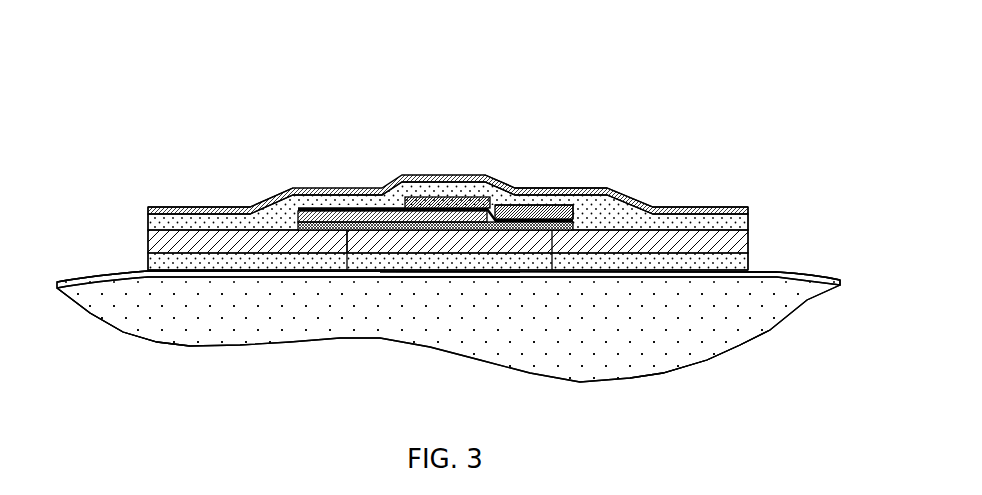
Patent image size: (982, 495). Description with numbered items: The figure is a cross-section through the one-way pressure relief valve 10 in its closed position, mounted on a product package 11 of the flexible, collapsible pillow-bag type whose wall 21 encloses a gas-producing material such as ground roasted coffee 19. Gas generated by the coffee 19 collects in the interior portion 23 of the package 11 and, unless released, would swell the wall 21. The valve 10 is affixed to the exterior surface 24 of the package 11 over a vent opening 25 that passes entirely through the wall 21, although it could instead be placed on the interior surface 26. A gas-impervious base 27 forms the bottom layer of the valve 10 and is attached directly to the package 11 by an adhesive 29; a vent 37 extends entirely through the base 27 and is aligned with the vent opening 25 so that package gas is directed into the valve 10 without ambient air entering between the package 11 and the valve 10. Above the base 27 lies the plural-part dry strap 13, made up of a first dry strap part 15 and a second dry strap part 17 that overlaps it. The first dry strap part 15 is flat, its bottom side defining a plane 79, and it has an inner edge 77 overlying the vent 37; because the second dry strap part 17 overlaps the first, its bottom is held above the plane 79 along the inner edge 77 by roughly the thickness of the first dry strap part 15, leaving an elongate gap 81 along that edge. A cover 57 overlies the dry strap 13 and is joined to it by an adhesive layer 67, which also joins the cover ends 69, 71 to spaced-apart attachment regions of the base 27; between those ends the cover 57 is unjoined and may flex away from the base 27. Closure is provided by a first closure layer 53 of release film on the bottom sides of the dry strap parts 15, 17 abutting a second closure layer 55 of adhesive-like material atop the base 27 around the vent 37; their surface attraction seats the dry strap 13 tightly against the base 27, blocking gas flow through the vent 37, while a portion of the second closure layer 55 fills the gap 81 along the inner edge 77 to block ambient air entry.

The one-way pressure relief valve 10 is at (213, 107).
The product package 11 is at (82, 277).
The plural-part dry strap 13 is at (433, 198).
The first dry strap part 15 is at (368, 206).
The second dry strap part 17 is at (500, 206).
The ground roasted coffee 19 is at (138, 318).
The wall 21 is at (127, 275).
The interior portion 23 is at (698, 363).
The exterior surface 24 is at (773, 272).
The vent opening 25 is at (450, 278).
The interior surface 26 is at (790, 280).
The base 27 is at (277, 247).
The adhesive 29 is at (330, 238).
The vent 37 is at (523, 238).
The first closure layer 53 is at (395, 210).
The second closure layer 55 is at (402, 233).
The cover 57 is at (467, 175).
The adhesive layer 67 is at (338, 207).
The cover end 69 is at (183, 207).
The cover end 71 is at (672, 208).
The inner edge 77 is at (488, 205).
The plane 79 is at (148, 215).
The elongate gap 81 is at (493, 226).